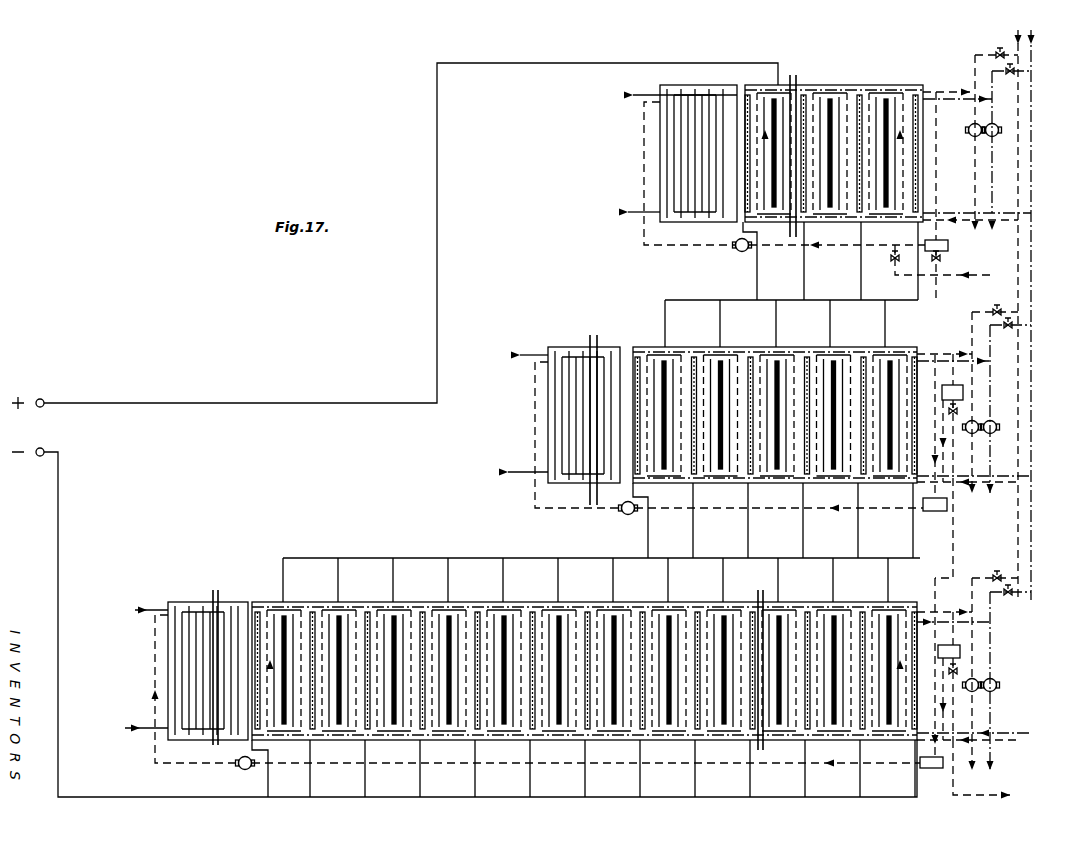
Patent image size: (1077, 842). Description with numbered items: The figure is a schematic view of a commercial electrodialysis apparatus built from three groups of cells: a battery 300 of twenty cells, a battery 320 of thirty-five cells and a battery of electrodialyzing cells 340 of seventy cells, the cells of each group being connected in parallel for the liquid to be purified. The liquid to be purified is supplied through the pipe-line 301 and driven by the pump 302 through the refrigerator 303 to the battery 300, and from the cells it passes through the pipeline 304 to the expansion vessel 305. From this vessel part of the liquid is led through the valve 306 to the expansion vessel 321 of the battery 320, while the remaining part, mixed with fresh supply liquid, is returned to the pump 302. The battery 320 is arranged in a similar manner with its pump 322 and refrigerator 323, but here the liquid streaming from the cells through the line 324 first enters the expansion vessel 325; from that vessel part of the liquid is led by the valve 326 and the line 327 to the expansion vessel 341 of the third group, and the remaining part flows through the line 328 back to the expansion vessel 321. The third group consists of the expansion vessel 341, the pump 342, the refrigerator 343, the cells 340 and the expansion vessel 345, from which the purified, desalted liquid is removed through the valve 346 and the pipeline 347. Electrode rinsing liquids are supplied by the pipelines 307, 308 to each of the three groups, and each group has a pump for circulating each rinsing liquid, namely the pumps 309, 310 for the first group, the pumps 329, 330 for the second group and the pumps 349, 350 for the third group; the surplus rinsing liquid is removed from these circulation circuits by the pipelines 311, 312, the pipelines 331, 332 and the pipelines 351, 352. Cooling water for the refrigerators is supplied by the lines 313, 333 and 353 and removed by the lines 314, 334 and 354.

The battery of electrodialysis cells 300 is at (826, 118).
The pipe-line 301 is at (987, 277).
The pump 302 is at (740, 252).
The refrigerator 303 is at (673, 160).
The pipeline 304 is at (937, 150).
The expansion vessel 305 is at (948, 245).
The valve 306 is at (942, 259).
The pipeline 307 is at (998, 50).
The pipeline 308 is at (1034, 56).
The pump 309 is at (999, 130).
The pump 310 is at (982, 128).
The pipeline 311 is at (977, 221).
The pipeline 312 is at (1000, 229).
The line 313 is at (624, 214).
The line 314 is at (631, 97).
The battery of electrodialysis cells 320 is at (790, 372).
The expansion vessel 321 is at (935, 512).
The pump 322 is at (626, 516).
The refrigerator 323 is at (563, 418).
The line 324 is at (940, 358).
The expansion vessel 325 is at (965, 388).
The valve 326 is at (958, 408).
The line 327 is at (957, 518).
The line 328 is at (946, 466).
The pump 329 is at (997, 428).
The pump 330 is at (979, 425).
The pipeline 331 is at (978, 485).
The pipeline 332 is at (995, 495).
The line 333 is at (516, 474).
The line 334 is at (524, 358).
The electrodialyzing cells 340 is at (790, 630).
The expansion vessel 341 is at (932, 770).
The pump 342 is at (243, 770).
The refrigerator 343 is at (200, 630).
The expansion vessel 345 is at (962, 650).
The valve 346 is at (958, 668).
The pipeline 347 is at (962, 797).
The pump 349 is at (997, 686).
The pump 350 is at (979, 690).
The pipeline 351 is at (975, 741).
The pipeline 352 is at (988, 757).
The line 353 is at (138, 726).
The line 354 is at (150, 612).